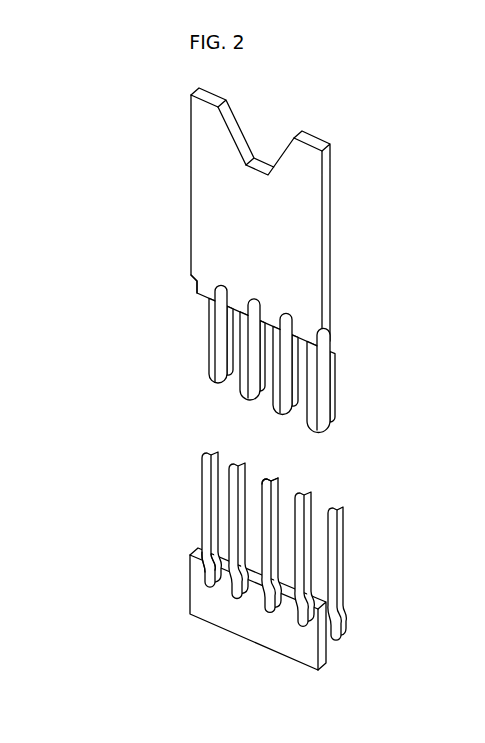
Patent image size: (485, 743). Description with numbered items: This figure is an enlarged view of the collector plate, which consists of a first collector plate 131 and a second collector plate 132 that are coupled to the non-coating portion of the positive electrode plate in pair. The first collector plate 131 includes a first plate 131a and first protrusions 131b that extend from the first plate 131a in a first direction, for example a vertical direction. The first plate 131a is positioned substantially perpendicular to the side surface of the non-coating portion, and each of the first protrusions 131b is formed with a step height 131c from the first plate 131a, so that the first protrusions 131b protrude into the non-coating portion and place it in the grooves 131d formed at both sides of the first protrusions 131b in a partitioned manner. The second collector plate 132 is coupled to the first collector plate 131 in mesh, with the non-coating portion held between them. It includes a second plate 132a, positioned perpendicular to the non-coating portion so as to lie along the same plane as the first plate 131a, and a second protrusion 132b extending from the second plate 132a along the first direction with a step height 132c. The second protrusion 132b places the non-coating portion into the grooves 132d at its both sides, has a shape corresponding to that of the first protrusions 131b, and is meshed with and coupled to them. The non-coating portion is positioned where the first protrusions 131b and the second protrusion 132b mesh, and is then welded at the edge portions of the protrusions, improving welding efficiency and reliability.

The first collector plate 131 is at (198, 255).
The first plate 131a is at (205, 187).
The first protrusions 131b is at (212, 338).
The step height 131c is at (197, 296).
The grooves 131d is at (236, 380).
The second collector plate 132 is at (228, 566).
The second plate 132a is at (222, 612).
The second protrusion 132b is at (200, 502).
The step height 132c is at (196, 549).
The grooves 132d is at (291, 493).